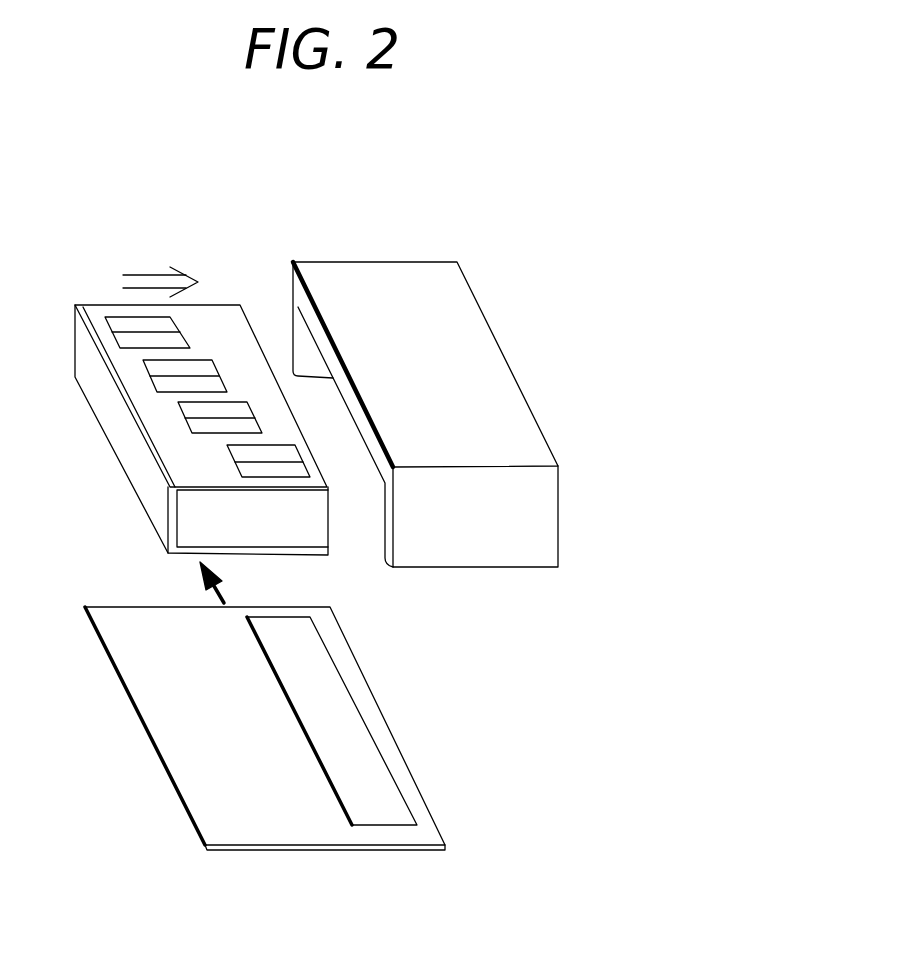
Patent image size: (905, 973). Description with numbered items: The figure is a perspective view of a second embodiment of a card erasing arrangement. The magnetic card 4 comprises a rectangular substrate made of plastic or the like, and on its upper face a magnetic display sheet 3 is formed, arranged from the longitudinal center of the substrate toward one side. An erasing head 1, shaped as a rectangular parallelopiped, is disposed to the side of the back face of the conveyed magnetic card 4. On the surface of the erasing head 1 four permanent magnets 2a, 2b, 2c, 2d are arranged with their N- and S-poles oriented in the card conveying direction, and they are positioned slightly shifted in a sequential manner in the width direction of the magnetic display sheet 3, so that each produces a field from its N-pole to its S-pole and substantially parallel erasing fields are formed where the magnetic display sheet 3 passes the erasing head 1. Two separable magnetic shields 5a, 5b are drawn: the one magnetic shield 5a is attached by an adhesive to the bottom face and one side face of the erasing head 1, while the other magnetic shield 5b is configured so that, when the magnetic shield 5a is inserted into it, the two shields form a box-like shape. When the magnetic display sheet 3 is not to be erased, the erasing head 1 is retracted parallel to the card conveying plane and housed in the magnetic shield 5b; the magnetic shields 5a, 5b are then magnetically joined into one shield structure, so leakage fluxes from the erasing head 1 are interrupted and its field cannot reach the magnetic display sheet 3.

The erasing head 1 is at (201, 353).
The permanent magnet 2a is at (165, 332).
The permanent magnet 2b is at (204, 376).
The permanent magnet 2c is at (236, 417).
The permanent magnet 2d is at (251, 461).
The magnetic display sheet 3 is at (332, 721).
The magnetic card 4 is at (248, 728).
The magnetic shield 5a is at (174, 430).
The magnetic shield 5b is at (454, 414).